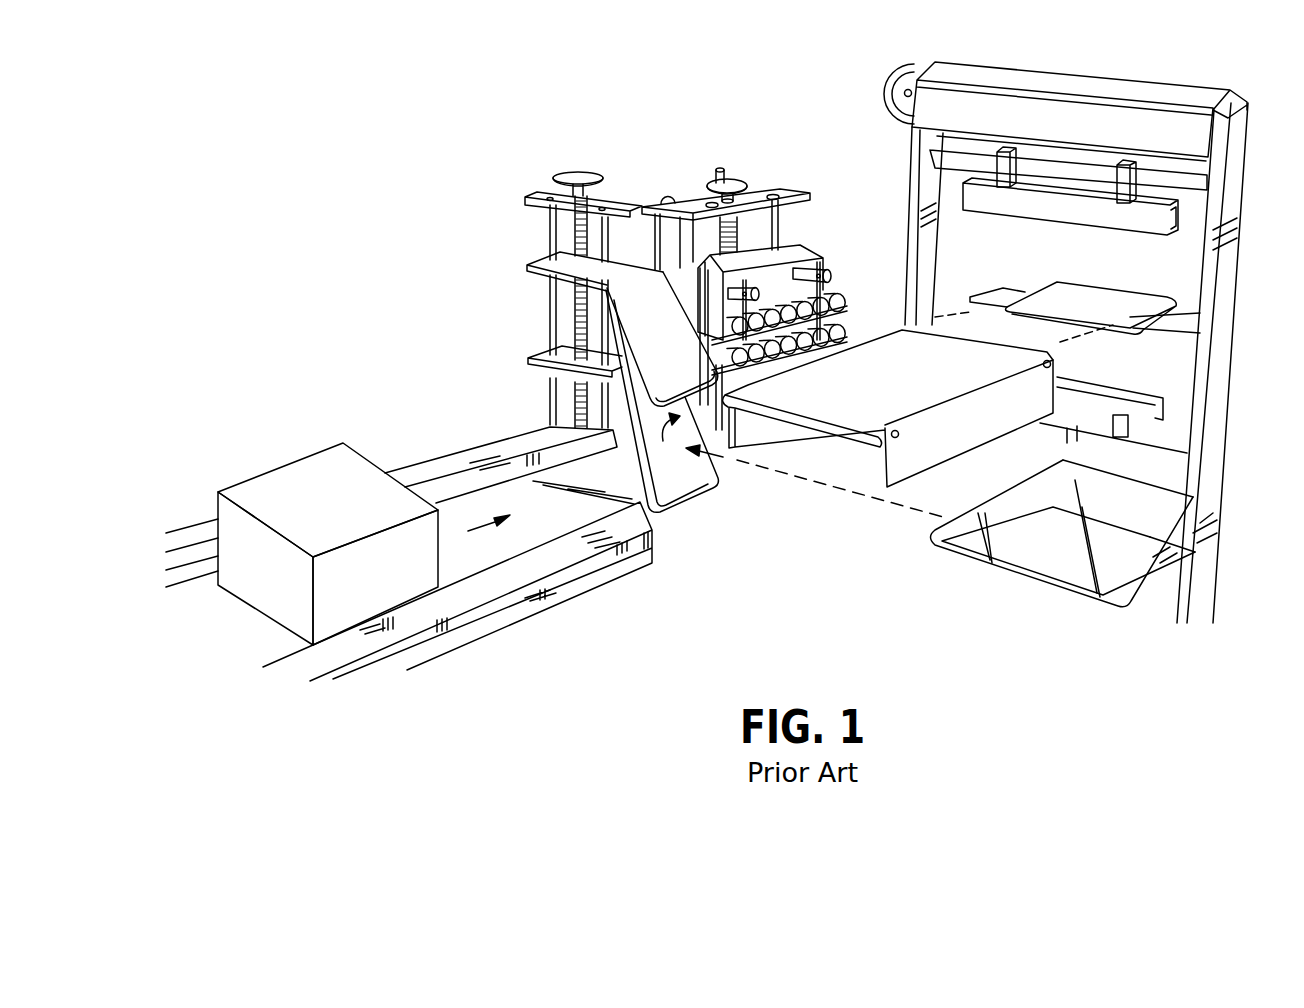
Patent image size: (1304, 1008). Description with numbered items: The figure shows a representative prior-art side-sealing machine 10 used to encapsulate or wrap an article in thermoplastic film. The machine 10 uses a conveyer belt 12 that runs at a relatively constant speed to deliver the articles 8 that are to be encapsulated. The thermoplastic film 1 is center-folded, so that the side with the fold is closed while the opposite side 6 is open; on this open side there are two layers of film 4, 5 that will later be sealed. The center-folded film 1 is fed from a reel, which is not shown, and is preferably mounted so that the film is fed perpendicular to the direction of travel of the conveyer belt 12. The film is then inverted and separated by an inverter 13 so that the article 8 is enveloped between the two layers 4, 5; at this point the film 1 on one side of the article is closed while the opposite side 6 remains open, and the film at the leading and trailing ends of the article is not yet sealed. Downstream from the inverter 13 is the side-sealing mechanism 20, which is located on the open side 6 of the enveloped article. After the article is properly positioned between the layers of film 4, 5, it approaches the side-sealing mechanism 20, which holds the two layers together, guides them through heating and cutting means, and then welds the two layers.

The thermoplastic film 1 is at (1060, 565).
The layer of film 4 is at (1193, 497).
The layer of film 5 is at (1200, 555).
The open side 6 is at (1208, 543).
The article 8 is at (302, 467).
The machine 10 is at (500, 226).
The conveyer belt 12 is at (457, 558).
The inverter 13 is at (682, 507).
The side-sealing mechanism 20 is at (691, 181).